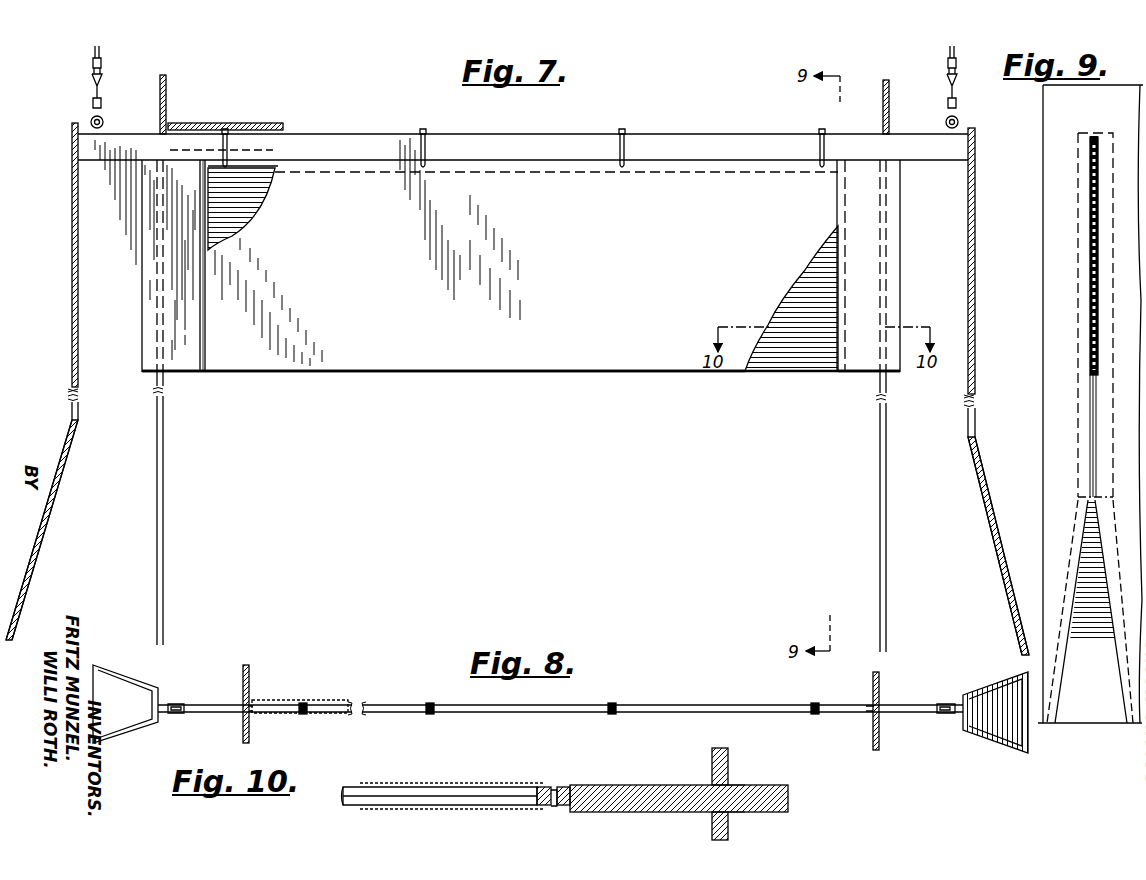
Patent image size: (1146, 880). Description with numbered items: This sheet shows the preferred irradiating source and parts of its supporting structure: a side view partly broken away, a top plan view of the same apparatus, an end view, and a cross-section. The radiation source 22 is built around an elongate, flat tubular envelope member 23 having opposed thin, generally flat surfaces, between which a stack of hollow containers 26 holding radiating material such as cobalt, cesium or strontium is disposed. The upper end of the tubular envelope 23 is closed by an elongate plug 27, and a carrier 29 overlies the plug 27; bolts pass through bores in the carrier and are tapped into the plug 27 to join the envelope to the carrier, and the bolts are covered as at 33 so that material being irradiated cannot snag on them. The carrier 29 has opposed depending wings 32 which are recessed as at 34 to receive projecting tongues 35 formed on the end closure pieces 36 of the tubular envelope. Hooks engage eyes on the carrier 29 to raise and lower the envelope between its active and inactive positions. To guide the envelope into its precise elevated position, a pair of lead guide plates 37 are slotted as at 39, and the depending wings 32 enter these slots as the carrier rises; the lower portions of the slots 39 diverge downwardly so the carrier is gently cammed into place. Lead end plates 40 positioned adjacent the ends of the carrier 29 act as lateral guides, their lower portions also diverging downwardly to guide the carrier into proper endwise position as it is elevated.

In FIG. 7, the radiation source 22 is at (400, 374).
In FIG. 9, the radiation source 22 is at (1086, 373).
In FIG. 7, the tubular envelope member 23 is at (284, 373).
In FIG. 9, the tubular envelope member 23 is at (1090, 248).
In FIG. 10, the tubular envelope member 23 is at (384, 784).
In FIG. 9, the hollow containers 26 is at (1090, 212).
In FIG. 10, the hollow containers 26 is at (426, 790).
In FIG. 7, the plug 27 is at (273, 172).
In FIG. 9, the plug 27 is at (1090, 174).
In FIG. 7, the carrier 29 is at (300, 134).
In FIG. 8, the carrier 29 is at (376, 705).
In FIG. 9, the carrier 29 is at (1090, 150).
In FIG. 10, the depending wings 32 is at (632, 785).
In FIG. 7, the bolt cover 33 is at (243, 124).
In FIG. 8, the bolt cover 33 is at (276, 700).
In FIG. 9, the bolt cover 33 is at (1094, 135).
In FIG. 10, the recess 34 is at (572, 786).
In FIG. 10, the projecting tongue 35 is at (558, 788).
In FIG. 7, the end closure pieces 36 is at (203, 285).
In FIG. 10, the end closure pieces 36 is at (545, 787).
In FIG. 9, the lead guide plates 37 is at (1050, 106).
In FIG. 10, the lead guide plates 37 is at (728, 760).
In FIG. 9, the slots 39 is at (1090, 426).
In FIG. 10, the slots 39 is at (730, 784).
In FIG. 9, the lead end plates 40 is at (1076, 288).